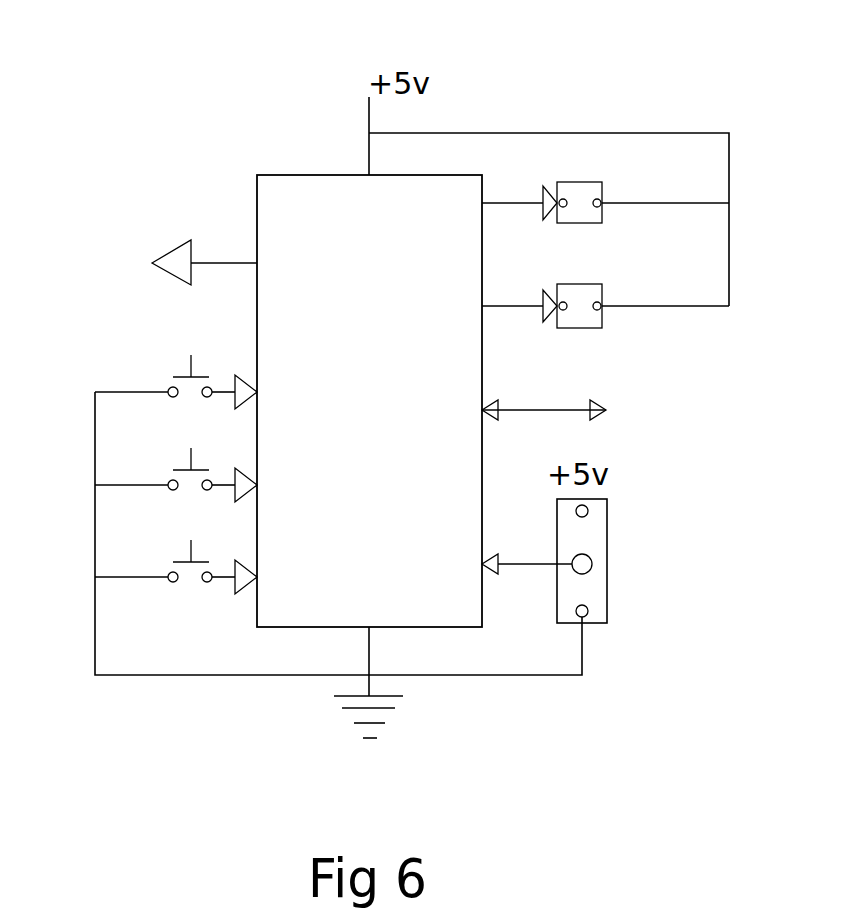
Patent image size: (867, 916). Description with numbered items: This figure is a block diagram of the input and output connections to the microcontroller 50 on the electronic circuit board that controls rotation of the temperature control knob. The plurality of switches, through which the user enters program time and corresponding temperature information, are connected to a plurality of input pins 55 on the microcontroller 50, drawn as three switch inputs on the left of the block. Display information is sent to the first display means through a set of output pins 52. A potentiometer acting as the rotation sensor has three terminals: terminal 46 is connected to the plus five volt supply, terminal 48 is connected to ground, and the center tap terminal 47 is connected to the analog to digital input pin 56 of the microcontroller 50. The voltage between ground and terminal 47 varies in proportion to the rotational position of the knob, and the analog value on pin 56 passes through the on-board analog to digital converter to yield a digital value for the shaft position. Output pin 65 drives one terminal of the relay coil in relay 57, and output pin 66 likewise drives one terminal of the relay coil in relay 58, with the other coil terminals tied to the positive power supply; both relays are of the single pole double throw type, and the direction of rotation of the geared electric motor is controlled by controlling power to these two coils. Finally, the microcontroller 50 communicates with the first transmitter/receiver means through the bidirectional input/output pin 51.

The microcontroller 50 is at (276, 368).
The output pins 52 is at (143, 239).
The input pins 55 is at (141, 463).
The output pin 65 is at (585, 133).
The output pin 66 is at (568, 159).
The relay 57 is at (678, 161).
The relay 58 is at (681, 278).
The input/output pin 51 is at (611, 388).
The terminal 46 is at (655, 489).
The terminal 47 is at (656, 545).
The terminal 48 is at (658, 593).
The analog to digital input pin 56 is at (578, 649).